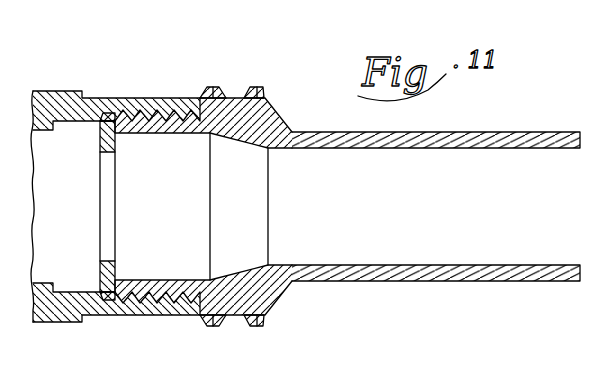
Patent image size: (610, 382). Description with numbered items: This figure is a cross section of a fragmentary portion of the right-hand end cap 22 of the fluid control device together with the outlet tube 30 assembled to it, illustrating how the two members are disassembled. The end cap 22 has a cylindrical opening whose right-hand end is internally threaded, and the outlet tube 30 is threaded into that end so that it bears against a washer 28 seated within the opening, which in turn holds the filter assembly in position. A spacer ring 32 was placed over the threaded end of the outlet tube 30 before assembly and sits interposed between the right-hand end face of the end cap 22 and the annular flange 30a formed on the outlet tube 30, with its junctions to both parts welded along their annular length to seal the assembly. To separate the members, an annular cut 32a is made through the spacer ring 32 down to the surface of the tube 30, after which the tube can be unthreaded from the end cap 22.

The end cap 22 is at (103, 96).
The washer 28 is at (100, 137).
The outlet tube 30 is at (428, 132).
The annular flange 30a is at (276, 112).
The spacer ring 32 is at (253, 97).
The annular cut 32a is at (240, 97).